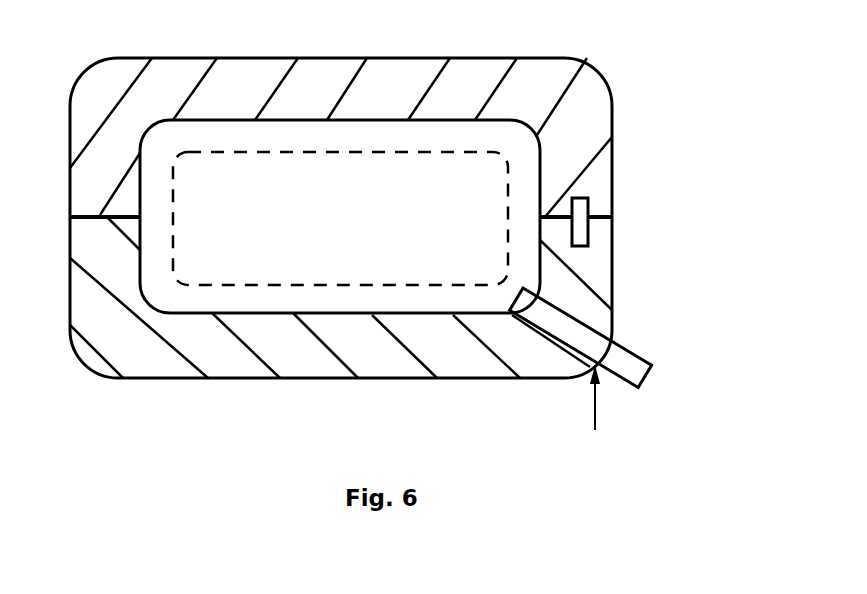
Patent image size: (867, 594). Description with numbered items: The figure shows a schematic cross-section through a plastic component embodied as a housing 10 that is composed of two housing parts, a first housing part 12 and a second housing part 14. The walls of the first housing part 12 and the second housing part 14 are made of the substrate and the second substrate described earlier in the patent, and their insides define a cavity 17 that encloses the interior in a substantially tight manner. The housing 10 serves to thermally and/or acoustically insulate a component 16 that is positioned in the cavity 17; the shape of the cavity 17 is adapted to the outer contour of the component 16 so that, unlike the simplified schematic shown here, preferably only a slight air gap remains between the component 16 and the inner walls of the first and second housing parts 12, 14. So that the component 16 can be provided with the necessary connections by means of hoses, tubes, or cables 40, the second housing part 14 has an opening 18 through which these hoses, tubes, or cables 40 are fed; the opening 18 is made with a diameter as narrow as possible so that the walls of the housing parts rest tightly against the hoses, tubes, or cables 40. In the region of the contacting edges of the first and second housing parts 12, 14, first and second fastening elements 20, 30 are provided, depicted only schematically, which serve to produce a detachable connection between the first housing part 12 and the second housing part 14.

The housing 10 is at (410, 240).
The first housing part 12 is at (550, 77).
The second housing part 14 is at (387, 360).
The component 16 is at (270, 278).
The cavity 17 is at (432, 298).
The opening 18 is at (579, 411).
The first fastening element 20 is at (661, 202).
The second fastening element 30 is at (598, 210).
The hoses, tubes, or cables 40 is at (568, 333).